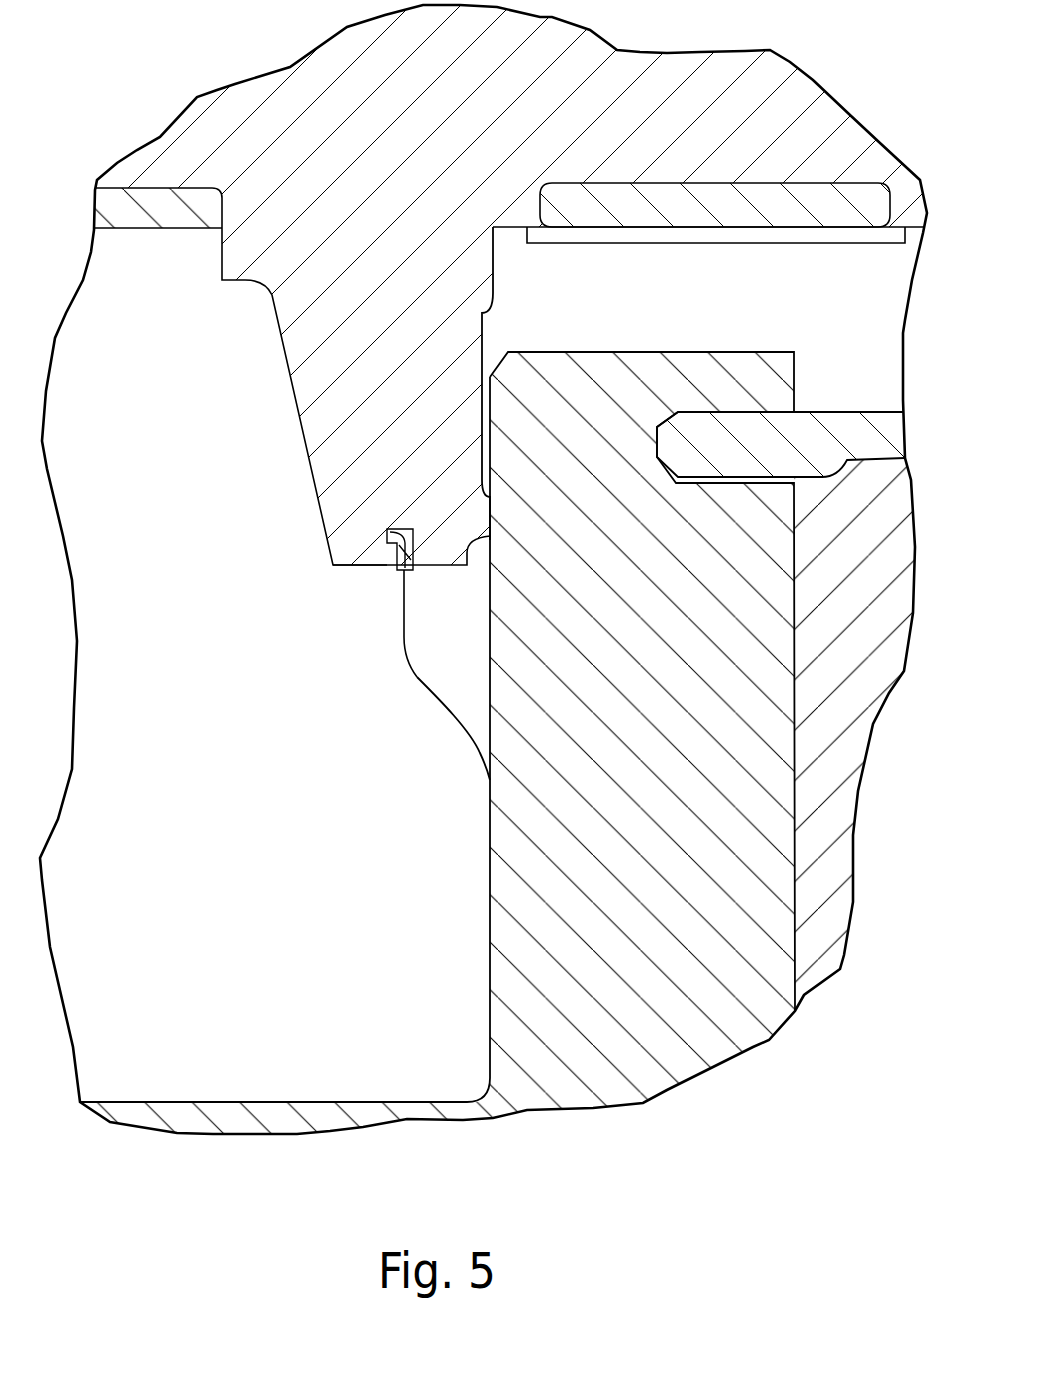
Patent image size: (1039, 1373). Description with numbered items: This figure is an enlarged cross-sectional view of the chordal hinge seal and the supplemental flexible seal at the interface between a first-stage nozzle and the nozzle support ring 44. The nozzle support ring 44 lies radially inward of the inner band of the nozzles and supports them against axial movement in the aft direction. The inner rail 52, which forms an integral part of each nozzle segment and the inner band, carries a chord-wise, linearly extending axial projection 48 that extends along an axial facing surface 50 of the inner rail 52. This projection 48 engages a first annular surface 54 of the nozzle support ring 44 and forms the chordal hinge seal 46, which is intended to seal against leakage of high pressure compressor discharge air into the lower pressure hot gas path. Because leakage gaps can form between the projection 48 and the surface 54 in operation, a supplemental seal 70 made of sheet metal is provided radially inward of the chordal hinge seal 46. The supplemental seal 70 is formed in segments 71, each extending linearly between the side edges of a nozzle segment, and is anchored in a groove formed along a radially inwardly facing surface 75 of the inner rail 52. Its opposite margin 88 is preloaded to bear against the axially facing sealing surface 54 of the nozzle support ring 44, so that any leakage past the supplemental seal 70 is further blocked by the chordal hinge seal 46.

The nozzle support ring 44 is at (660, 1080).
The chordal hinge seal 46 is at (537, 531).
The axial projection 48 is at (483, 515).
The axial facing surface 50 is at (483, 345).
The inner rail 52 is at (352, 342).
The first annular surface 54 is at (488, 868).
The supplemental seal 70 is at (357, 598).
The seal segment 71 is at (417, 677).
The radially inwardly facing surface 75 is at (346, 566).
The opposite margin 88 is at (480, 760).